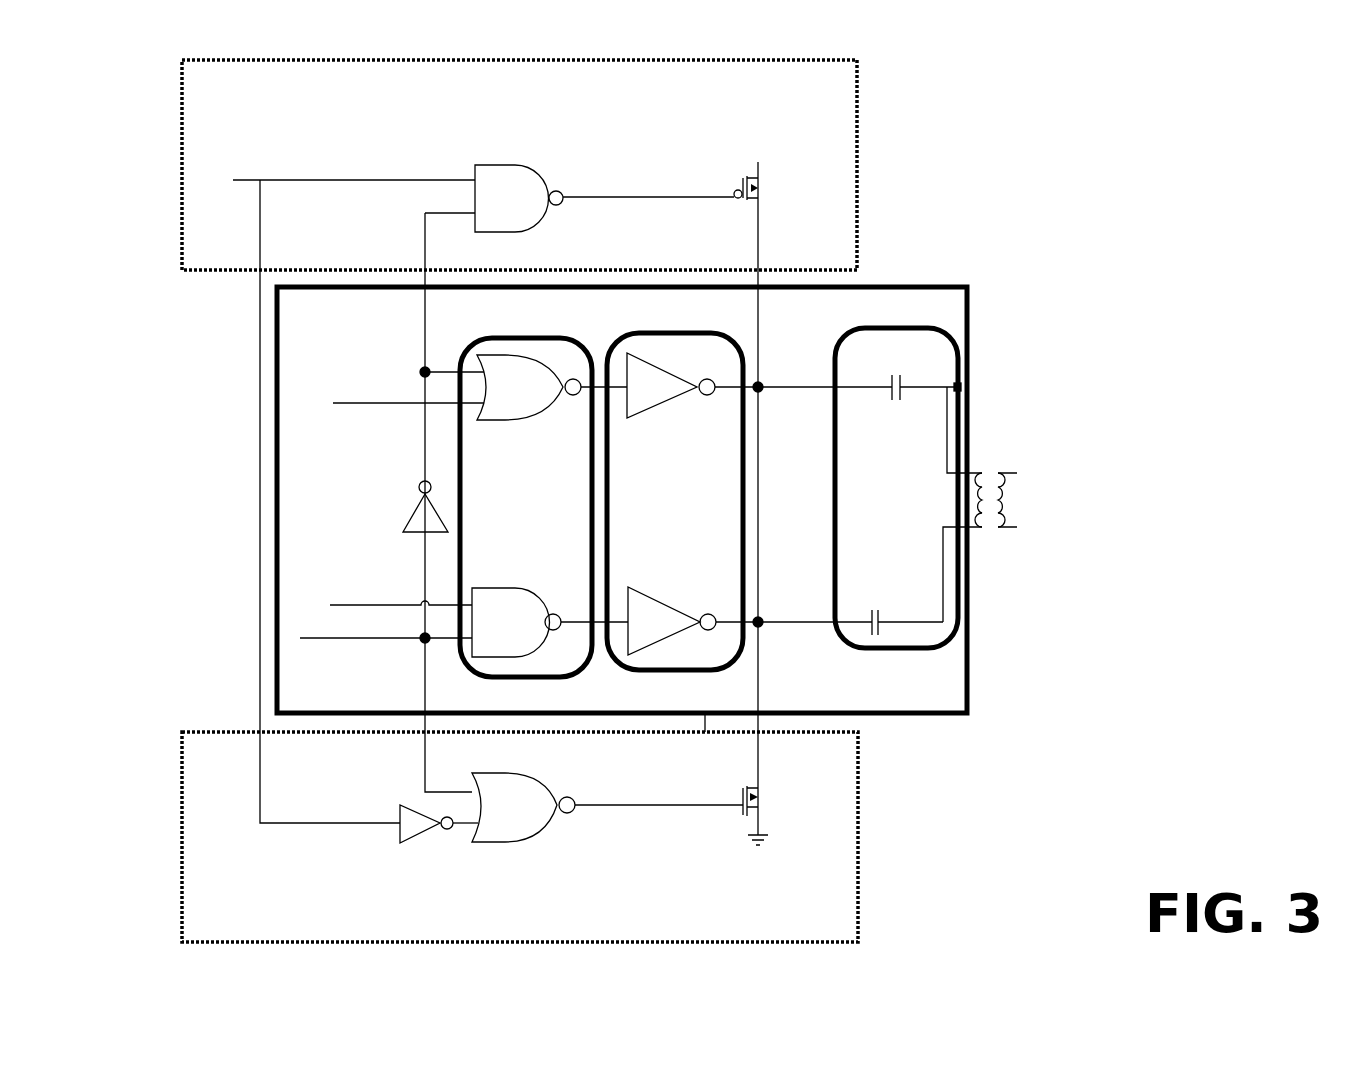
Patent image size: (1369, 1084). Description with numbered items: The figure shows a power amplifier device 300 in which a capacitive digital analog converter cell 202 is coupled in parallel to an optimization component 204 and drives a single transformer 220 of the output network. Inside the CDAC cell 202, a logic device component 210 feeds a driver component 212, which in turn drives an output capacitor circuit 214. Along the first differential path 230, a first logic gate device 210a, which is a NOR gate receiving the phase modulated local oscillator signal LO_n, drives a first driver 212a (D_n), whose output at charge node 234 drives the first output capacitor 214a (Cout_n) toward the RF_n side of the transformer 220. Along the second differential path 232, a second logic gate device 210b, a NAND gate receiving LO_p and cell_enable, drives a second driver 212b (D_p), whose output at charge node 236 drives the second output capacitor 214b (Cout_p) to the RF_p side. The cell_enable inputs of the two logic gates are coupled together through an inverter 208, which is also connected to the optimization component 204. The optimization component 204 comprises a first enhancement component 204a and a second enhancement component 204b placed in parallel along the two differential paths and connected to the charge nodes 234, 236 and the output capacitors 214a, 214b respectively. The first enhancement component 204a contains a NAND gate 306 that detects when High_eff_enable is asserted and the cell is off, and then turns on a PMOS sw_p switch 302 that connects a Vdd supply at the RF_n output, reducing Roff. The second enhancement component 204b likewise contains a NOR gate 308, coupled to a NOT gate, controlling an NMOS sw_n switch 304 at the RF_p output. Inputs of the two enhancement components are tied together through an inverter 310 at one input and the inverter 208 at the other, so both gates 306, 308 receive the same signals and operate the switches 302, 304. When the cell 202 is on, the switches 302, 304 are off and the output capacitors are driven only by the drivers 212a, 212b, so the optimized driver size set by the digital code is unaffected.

The power amplifier circuit 300 is at (1222, 84).
The optimization component 204 is at (114, 115).
The first enhancement component 204a is at (857, 165).
The second enhancement component 204b is at (858, 855).
The CDAC cell 202 is at (935, 282).
The NAND gate 306 is at (505, 162).
The PMOS sw_p transistor switch 302 is at (738, 186).
The NMOS sw_n transistor switch 304 is at (740, 802).
The NOR gate 308 is at (540, 775).
The inverter 310 is at (398, 812).
The logic device component 210 is at (462, 470).
The first logic gate device 210a is at (530, 355).
The second logic gate device 210b is at (495, 658).
The inverter 208 is at (410, 520).
The driver component 212 is at (745, 532).
The first driver 212a is at (652, 353).
The second driver 212b is at (645, 655).
The charge node 234 is at (758, 392).
The charge node 236 is at (758, 618).
The first differential path 230 is at (810, 343).
The first output capacitor 214a is at (900, 402).
The second output capacitor 214b is at (875, 640).
The second differential path 232 is at (788, 658).
The output capacitor circuit 214 is at (968, 392).
The single transformer 220 is at (1003, 532).